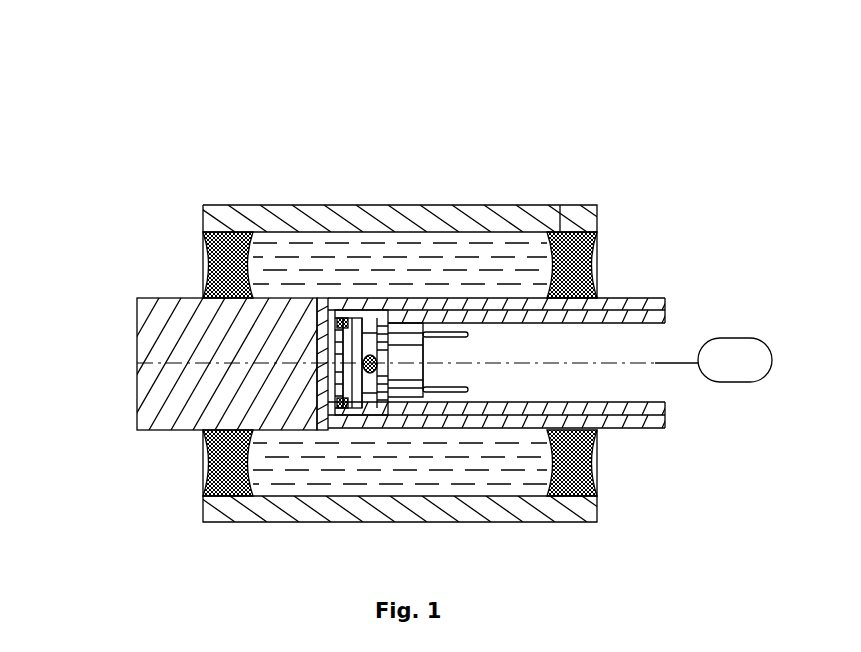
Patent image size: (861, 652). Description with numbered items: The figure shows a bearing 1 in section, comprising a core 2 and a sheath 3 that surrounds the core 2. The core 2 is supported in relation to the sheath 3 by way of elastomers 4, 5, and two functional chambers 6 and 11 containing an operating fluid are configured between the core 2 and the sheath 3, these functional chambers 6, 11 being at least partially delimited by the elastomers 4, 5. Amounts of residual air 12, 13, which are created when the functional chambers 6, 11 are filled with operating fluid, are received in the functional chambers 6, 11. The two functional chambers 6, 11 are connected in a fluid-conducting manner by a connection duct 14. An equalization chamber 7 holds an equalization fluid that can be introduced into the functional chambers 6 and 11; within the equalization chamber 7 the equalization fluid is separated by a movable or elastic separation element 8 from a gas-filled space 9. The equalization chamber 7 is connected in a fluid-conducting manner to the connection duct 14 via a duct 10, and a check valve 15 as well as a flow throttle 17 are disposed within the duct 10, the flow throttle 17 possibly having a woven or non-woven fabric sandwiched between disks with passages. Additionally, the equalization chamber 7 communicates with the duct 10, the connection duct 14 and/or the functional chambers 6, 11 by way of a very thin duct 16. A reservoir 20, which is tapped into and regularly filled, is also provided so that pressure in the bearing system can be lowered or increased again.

The bearing 1 is at (313, 122).
The core 2 is at (135, 377).
The sheath 3 is at (518, 205).
The elastomer 4 is at (207, 260).
The elastomer 5 is at (590, 262).
The functional chamber 6 is at (352, 248).
The equalization chamber 7 is at (413, 382).
The separation element 8 is at (437, 325).
The gas-filled space 9 is at (605, 343).
The duct 10 is at (320, 423).
The functional chamber 11 is at (268, 476).
The residual air 12 is at (547, 232).
The residual air 13 is at (598, 522).
The connection duct 14 is at (320, 305).
The check valve 15 is at (372, 412).
The very thin duct 16 is at (381, 375).
The flow throttle 17 is at (357, 320).
The reservoir 20 is at (740, 388).